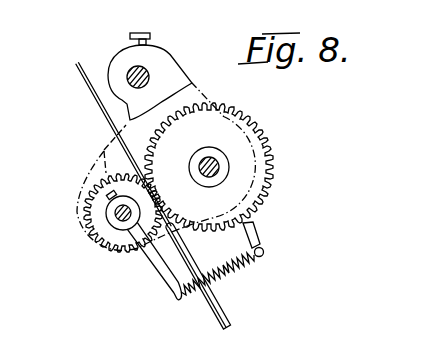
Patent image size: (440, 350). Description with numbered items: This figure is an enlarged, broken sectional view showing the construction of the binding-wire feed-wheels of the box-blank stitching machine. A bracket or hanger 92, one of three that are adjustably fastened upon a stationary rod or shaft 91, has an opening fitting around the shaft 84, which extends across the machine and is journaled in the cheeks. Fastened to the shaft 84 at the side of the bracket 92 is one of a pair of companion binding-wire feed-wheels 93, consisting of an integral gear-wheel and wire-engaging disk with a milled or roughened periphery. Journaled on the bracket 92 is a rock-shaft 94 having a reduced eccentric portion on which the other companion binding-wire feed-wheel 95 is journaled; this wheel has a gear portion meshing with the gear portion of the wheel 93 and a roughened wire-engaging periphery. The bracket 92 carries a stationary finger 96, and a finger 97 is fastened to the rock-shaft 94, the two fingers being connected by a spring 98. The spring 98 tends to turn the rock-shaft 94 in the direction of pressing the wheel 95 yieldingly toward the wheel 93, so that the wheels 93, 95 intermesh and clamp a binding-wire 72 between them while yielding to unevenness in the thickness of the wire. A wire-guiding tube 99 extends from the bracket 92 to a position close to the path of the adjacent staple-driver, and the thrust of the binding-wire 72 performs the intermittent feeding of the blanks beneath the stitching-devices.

The binding-wire 72 is at (98, 95).
The shaft 84 is at (220, 167).
The stationary rod or shaft 91 is at (148, 73).
The bracket or hanger 92 is at (104, 151).
The binding-wire feed-wheel 93 is at (261, 132).
The rock-shaft 94 is at (112, 210).
The companion binding-wire feed-wheel 95 is at (87, 228).
The stationary finger 96 is at (261, 234).
The finger 97 is at (150, 265).
The spring 98 is at (229, 267).
The wire-guiding tube 99 is at (218, 310).